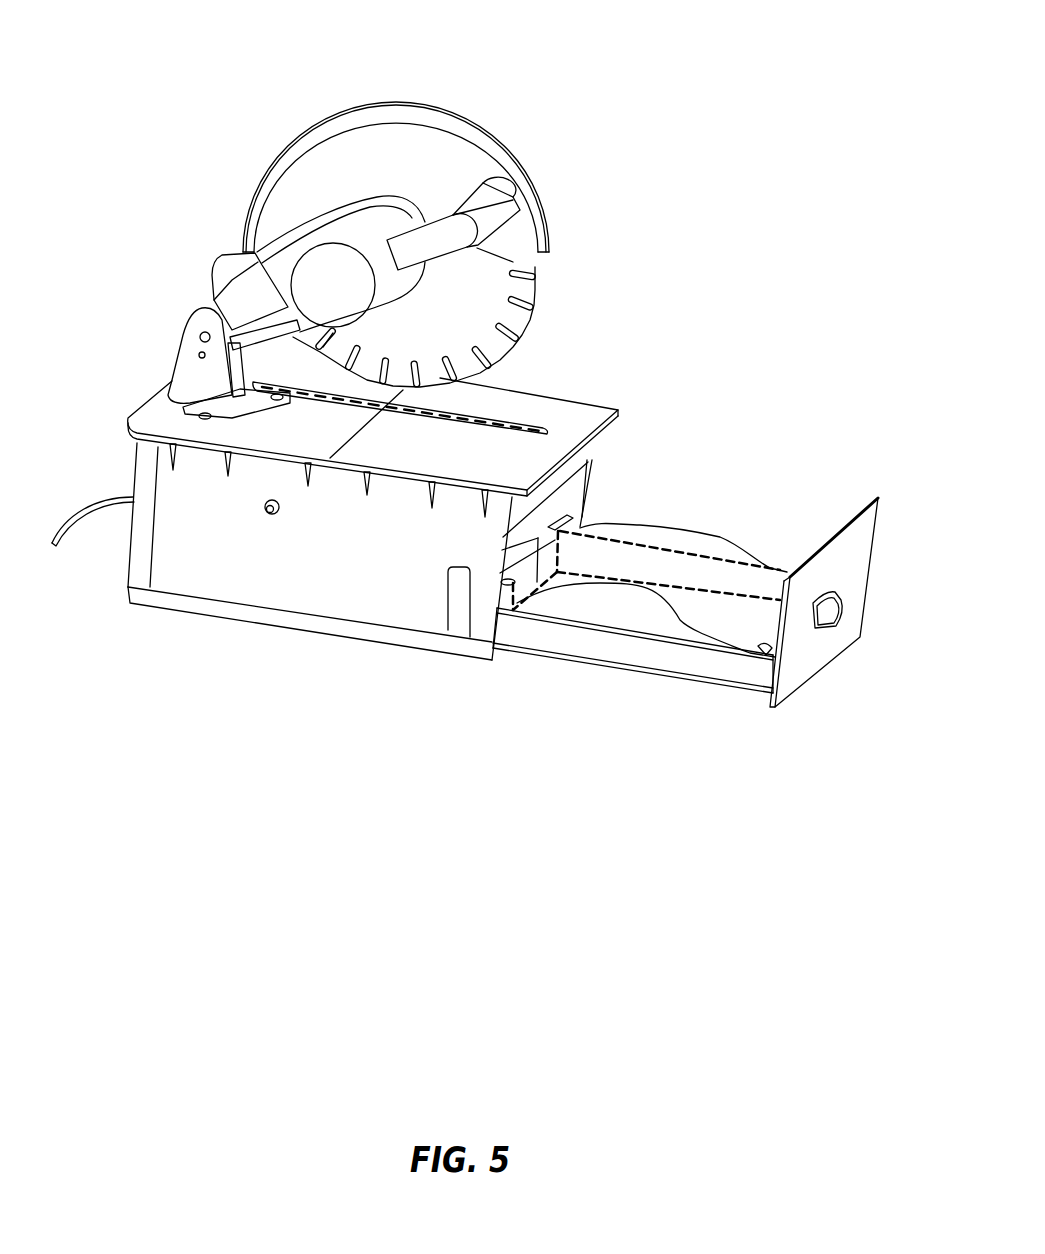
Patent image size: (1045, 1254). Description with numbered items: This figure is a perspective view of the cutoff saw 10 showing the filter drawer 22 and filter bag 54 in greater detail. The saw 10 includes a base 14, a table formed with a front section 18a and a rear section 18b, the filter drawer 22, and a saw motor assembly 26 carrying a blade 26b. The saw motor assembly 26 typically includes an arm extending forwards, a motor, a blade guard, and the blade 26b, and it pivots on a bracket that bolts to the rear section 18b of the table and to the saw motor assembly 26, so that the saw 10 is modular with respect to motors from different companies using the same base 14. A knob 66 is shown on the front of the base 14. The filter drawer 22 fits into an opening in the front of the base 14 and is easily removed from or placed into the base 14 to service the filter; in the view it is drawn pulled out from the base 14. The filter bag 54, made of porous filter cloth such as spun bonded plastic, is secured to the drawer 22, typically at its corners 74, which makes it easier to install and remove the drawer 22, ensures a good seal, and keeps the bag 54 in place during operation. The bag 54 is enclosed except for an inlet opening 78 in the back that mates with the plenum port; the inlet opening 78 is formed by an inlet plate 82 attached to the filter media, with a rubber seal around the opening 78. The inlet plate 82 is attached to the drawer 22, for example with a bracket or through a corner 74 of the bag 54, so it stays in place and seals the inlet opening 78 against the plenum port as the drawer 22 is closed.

The saw 10 is at (640, 171).
The base 14 is at (358, 563).
The front section 18a is at (504, 467).
The rear section 18b is at (340, 439).
The filter drawer 22 is at (808, 653).
The saw motor assembly 26 is at (347, 175).
The blade 26b is at (417, 332).
The filter bag 54 is at (642, 610).
The knob 66 is at (267, 513).
The corners 74 is at (640, 506).
The inlet opening 78 is at (583, 525).
The inlet plate 82 is at (548, 553).